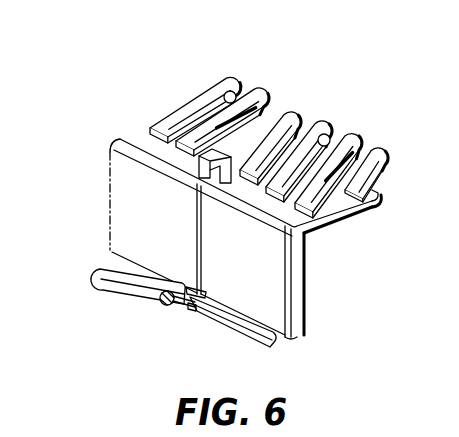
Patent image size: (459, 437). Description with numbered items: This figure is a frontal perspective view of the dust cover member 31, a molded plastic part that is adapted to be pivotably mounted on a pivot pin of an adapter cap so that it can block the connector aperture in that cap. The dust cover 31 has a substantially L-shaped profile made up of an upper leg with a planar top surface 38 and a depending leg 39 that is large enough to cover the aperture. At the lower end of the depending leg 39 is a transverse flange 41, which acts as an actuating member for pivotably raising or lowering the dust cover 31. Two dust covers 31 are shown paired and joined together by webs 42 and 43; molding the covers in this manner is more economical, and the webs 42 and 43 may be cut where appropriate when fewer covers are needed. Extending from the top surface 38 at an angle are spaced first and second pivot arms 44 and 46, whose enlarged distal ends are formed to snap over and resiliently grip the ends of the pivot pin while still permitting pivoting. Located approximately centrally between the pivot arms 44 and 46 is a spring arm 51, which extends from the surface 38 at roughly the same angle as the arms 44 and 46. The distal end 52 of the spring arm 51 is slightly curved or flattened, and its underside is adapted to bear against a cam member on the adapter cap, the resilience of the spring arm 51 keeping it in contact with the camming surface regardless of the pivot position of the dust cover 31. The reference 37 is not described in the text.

The dust cover member 31 is at (101, 143).
The top plate 37 is at (130, 134).
The planar top surface 38 is at (138, 135).
The depending leg 39 is at (118, 205).
The transverse flange 41 is at (123, 284).
The web 42 is at (203, 165).
The web 43 is at (172, 310).
The first pivot arm 44 is at (207, 95).
The second pivot arm 46 is at (283, 112).
The spring arm 51 is at (240, 90).
The distal end of spring arm 52 is at (262, 92).